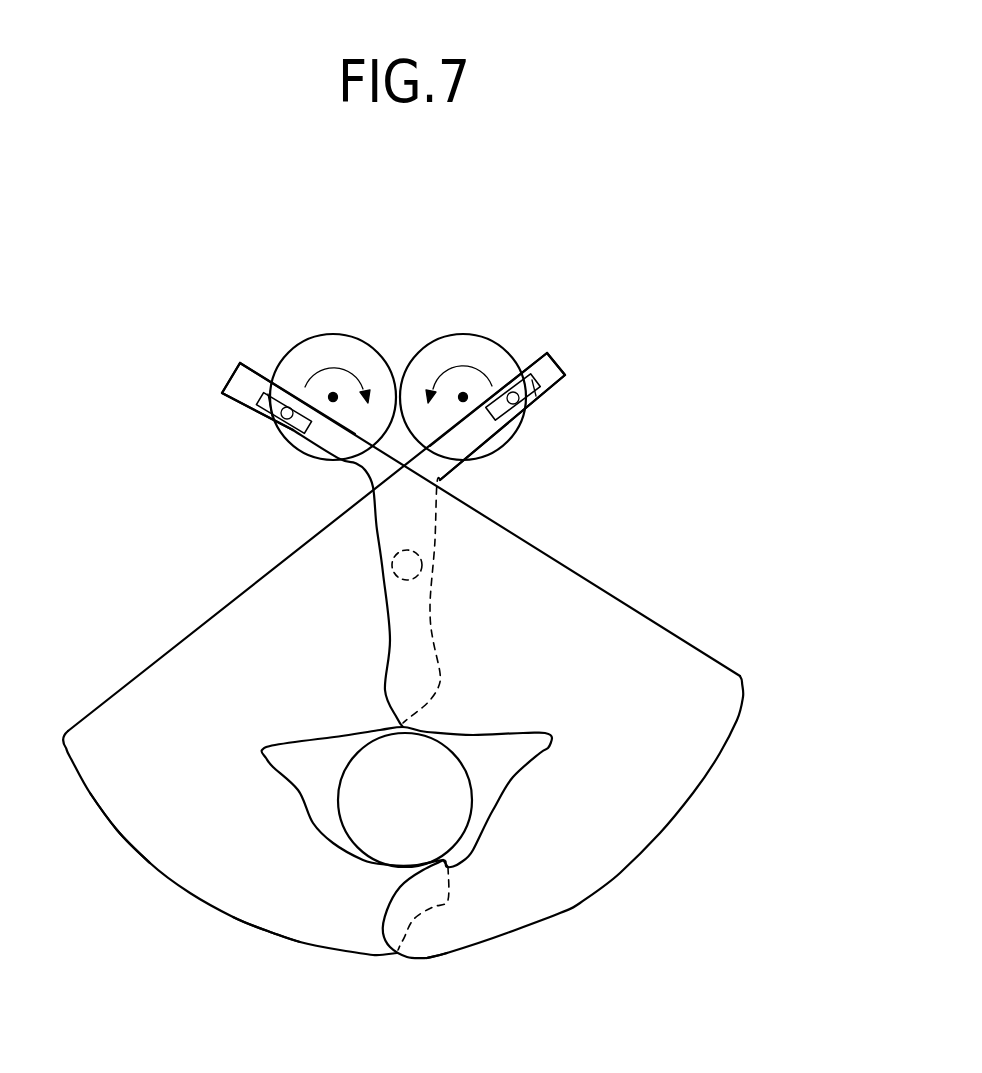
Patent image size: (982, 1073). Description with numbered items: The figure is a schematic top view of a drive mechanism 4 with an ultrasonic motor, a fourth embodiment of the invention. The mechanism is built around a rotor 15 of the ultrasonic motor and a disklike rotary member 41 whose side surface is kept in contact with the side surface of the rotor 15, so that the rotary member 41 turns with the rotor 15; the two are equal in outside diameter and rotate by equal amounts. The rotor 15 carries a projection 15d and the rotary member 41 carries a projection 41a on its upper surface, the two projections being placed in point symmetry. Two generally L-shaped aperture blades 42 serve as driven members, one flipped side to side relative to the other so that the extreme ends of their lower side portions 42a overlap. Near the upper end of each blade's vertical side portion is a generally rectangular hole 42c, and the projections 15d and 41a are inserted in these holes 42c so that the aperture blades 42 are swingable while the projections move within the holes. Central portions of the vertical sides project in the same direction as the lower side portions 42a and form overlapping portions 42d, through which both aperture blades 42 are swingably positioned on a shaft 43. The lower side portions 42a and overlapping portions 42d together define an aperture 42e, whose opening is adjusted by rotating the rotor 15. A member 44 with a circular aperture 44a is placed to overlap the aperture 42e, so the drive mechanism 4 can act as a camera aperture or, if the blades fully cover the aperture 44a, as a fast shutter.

The drive mechanism with an ultrasonic motor 4 is at (767, 658).
The rotor 15 is at (333, 350).
The projection 15d is at (273, 420).
The rotary member 41 is at (450, 350).
The projection 41a is at (527, 417).
The aperture blade 42 is at (303, 580).
The lower side portion 42a is at (212, 875).
The hole 42c is at (267, 380).
The overlapping portion 42d is at (195, 707).
The aperture 42e is at (497, 780).
The shaft 43 is at (395, 575).
The member 44 is at (517, 865).
The circular aperture 44a is at (427, 810).